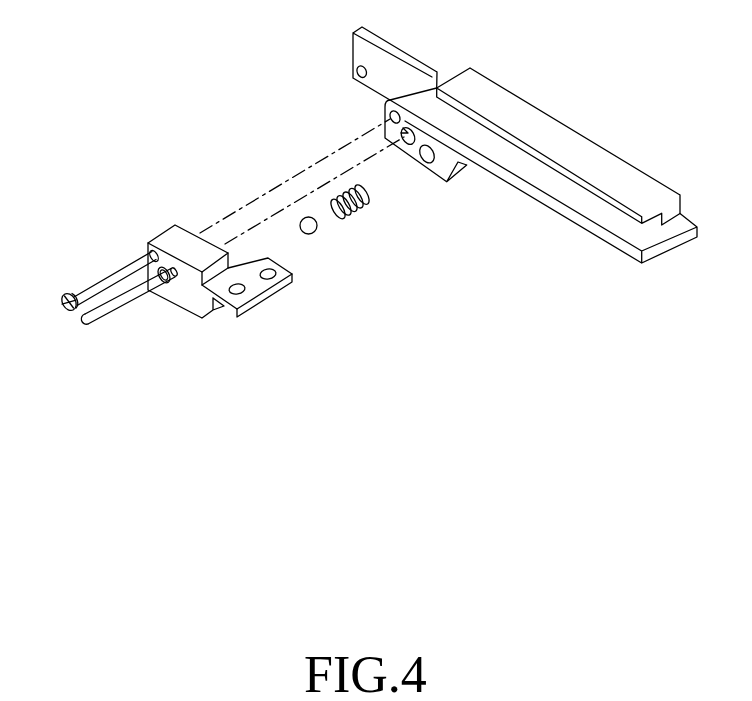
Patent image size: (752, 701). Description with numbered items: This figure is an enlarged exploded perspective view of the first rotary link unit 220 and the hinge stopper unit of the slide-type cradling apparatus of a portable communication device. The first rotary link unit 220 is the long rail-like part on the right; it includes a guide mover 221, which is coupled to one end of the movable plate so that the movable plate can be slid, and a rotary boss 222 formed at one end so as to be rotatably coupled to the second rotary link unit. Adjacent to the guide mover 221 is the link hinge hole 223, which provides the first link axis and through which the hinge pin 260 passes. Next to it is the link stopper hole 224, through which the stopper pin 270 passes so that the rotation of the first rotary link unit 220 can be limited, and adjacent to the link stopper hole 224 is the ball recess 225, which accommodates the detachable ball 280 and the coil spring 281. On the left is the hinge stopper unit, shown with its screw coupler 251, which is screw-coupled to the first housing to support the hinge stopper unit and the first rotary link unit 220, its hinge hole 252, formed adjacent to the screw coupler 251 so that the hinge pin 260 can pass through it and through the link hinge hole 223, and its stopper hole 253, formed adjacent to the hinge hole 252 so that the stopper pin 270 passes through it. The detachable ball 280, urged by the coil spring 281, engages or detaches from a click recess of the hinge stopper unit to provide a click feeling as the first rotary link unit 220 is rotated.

The first rotary link unit 220 is at (207, 150).
The guide mover 221 is at (570, 147).
The rotary boss 222 is at (357, 69).
The link hinge hole 223 is at (391, 116).
The link stopper hole 224 is at (403, 136).
The ball recess 225 is at (428, 158).
The screw coupler 251 is at (258, 289).
The hinge hole 252 is at (147, 240).
The stopper hole 253 is at (168, 281).
The hinge pin 260 is at (106, 283).
The stopper pin 270 is at (112, 308).
The detachable ball 280 is at (315, 232).
The coil spring 281 is at (364, 208).